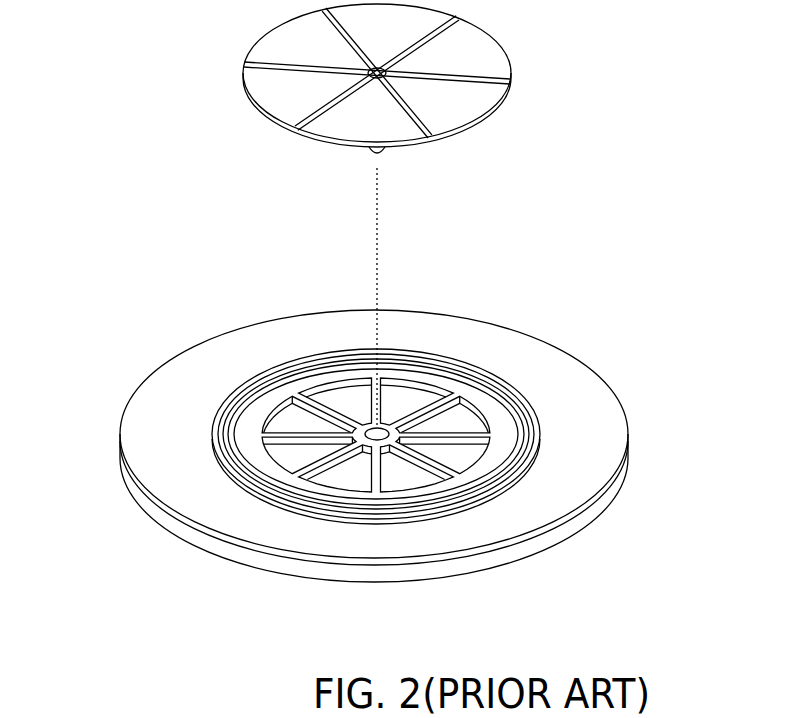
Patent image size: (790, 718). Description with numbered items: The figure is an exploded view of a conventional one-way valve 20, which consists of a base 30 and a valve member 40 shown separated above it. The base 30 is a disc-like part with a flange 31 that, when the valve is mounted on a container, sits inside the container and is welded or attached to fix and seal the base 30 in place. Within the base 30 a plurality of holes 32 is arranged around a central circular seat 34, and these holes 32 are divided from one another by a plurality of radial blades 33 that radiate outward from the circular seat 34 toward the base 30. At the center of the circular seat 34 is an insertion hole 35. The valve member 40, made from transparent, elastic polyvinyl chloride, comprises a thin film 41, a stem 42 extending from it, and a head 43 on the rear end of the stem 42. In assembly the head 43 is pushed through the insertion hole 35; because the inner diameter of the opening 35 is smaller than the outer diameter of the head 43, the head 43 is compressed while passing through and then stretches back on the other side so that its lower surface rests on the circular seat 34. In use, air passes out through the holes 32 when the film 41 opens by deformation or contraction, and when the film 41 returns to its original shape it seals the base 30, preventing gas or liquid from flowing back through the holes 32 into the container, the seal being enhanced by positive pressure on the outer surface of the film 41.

The one-way valve 20 is at (110, 0).
The base 30 is at (630, 334).
The flange 31 is at (595, 415).
The holes 32 is at (465, 425).
The radial blades 33 is at (460, 447).
The circular seat 34 is at (330, 443).
The insertion hole 35 is at (381, 431).
The valve member 40 is at (572, 40).
The film 41 is at (473, 42).
The stem 42 is at (438, 169).
The head 43 is at (386, 150).